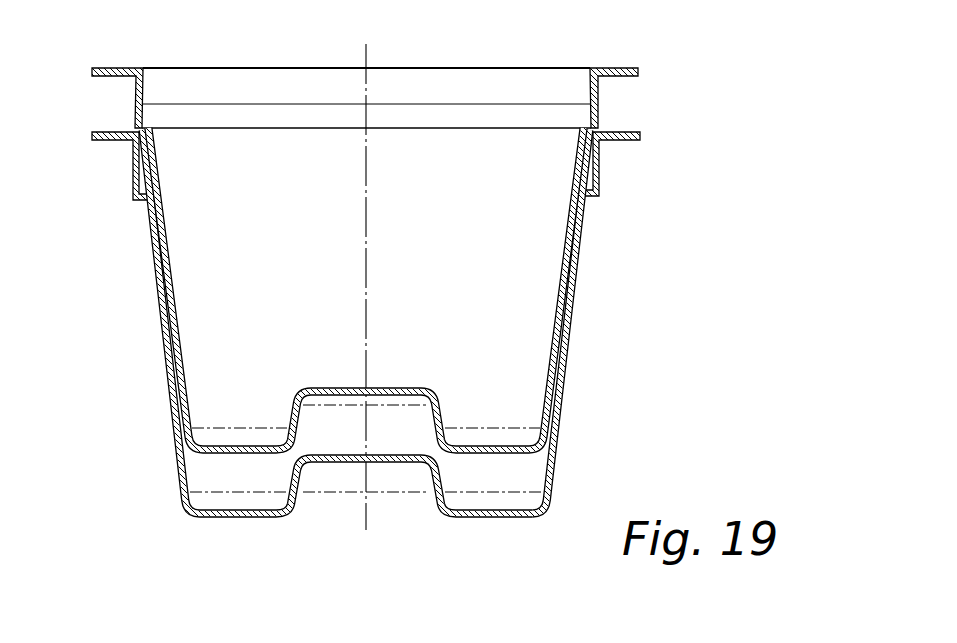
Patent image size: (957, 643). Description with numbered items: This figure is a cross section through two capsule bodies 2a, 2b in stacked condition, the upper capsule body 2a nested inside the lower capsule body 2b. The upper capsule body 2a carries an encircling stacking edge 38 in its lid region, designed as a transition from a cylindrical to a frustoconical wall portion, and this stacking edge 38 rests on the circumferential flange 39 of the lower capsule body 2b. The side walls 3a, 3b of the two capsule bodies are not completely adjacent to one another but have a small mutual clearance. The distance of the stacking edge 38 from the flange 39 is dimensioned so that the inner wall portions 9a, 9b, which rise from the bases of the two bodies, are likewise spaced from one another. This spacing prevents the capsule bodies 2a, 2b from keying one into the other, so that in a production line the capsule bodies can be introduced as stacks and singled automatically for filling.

The stacking edge 38 is at (134, 128).
The circumferential flange 39 is at (621, 128).
The capsule body 2a is at (416, 289).
The capsule body 2b is at (380, 344).
The side wall 3a is at (566, 222).
The side wall 3b is at (570, 348).
The inner wall portion 9a is at (292, 418).
The inner wall portion 9b is at (290, 485).